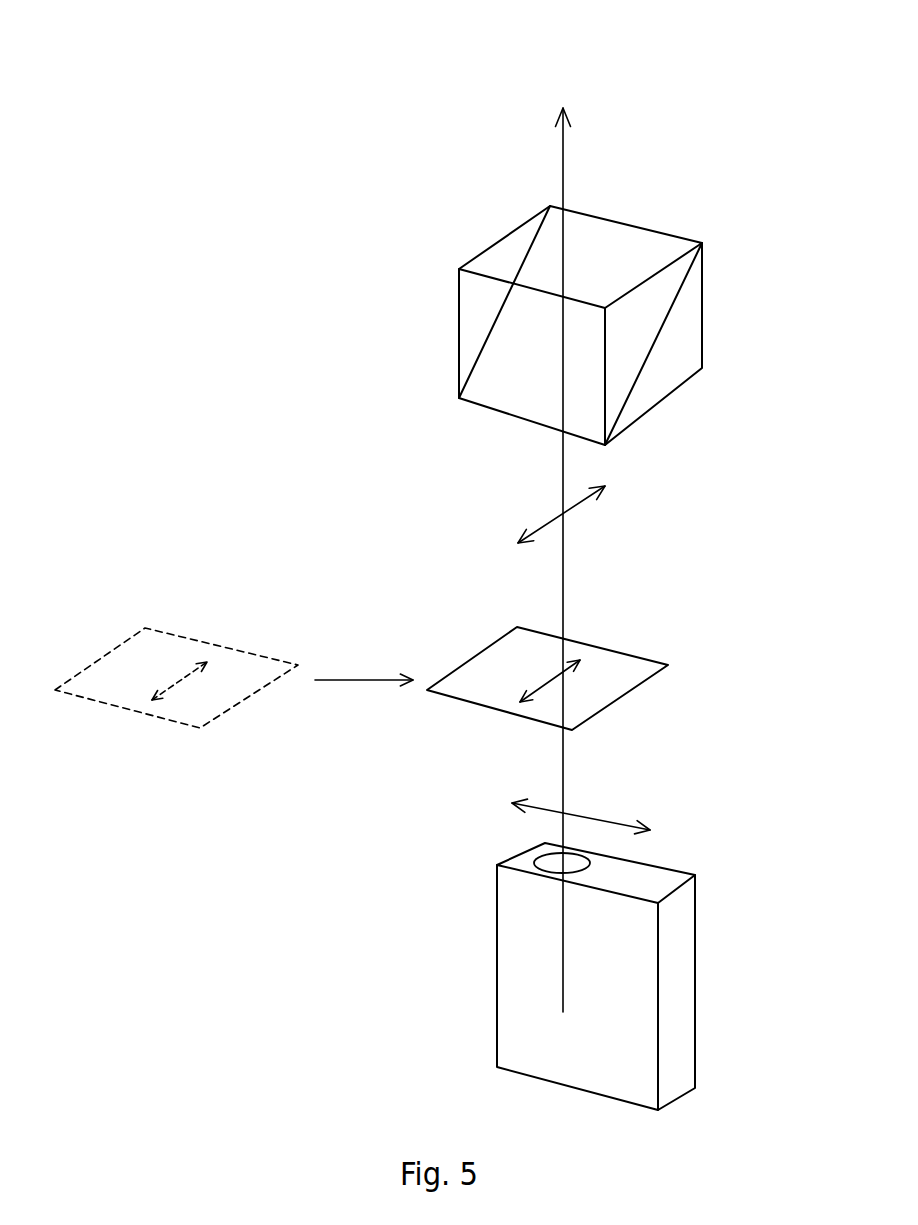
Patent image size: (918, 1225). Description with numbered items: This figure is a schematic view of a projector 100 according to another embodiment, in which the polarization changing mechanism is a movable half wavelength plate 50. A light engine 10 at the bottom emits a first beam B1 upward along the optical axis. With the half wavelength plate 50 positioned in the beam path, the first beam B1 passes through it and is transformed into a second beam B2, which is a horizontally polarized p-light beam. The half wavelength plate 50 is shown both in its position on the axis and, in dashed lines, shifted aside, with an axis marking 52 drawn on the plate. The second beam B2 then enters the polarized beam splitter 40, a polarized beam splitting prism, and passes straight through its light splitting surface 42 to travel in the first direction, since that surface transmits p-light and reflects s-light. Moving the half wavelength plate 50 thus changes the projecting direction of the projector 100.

The projector 100 is at (644, 57).
The light engine 10 is at (678, 1013).
The polarized beam splitter 40 is at (660, 357).
The light splitting surface 42 is at (655, 292).
The half wavelength plate 50 is at (593, 643).
The optical axis of wave plate 52 is at (547, 678).
The first beam B1 is at (562, 842).
The second beam B2 is at (562, 470).